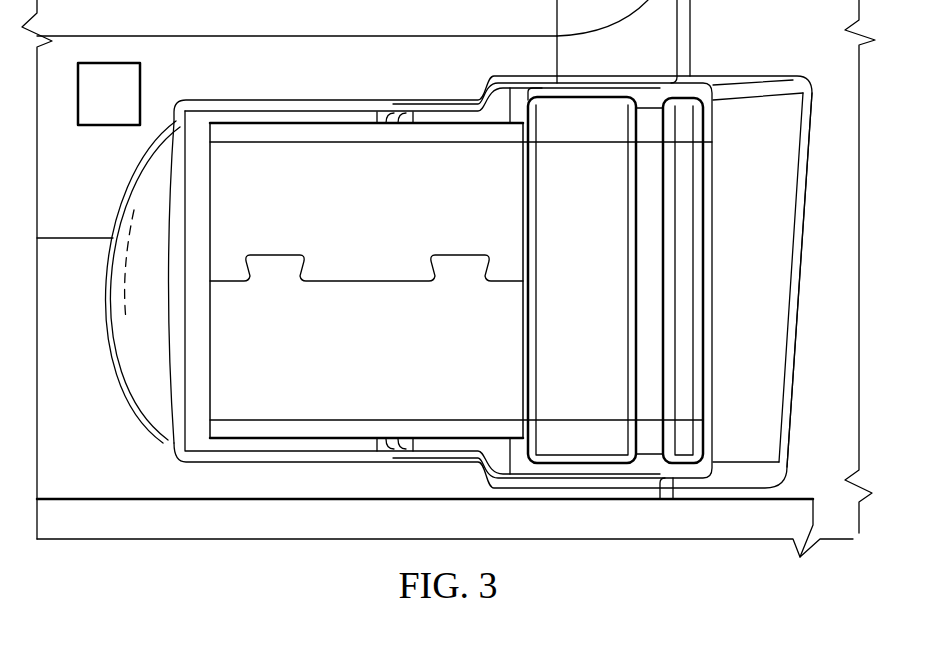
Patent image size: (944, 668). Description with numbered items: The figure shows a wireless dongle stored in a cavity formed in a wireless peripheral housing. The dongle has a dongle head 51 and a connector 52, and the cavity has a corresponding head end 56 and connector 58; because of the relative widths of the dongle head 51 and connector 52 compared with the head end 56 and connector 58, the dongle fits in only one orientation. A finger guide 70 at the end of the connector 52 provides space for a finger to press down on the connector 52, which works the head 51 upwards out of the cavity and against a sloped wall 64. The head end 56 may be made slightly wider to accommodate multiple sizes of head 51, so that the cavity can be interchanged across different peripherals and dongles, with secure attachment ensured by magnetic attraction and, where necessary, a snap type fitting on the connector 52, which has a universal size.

The dongle head 51 is at (565, 218).
The connector 52 is at (350, 218).
The head end 56 is at (647, 97).
The connector 58 is at (197, 133).
The sloped wall 64 is at (755, 122).
The finger guide 70 is at (152, 198).